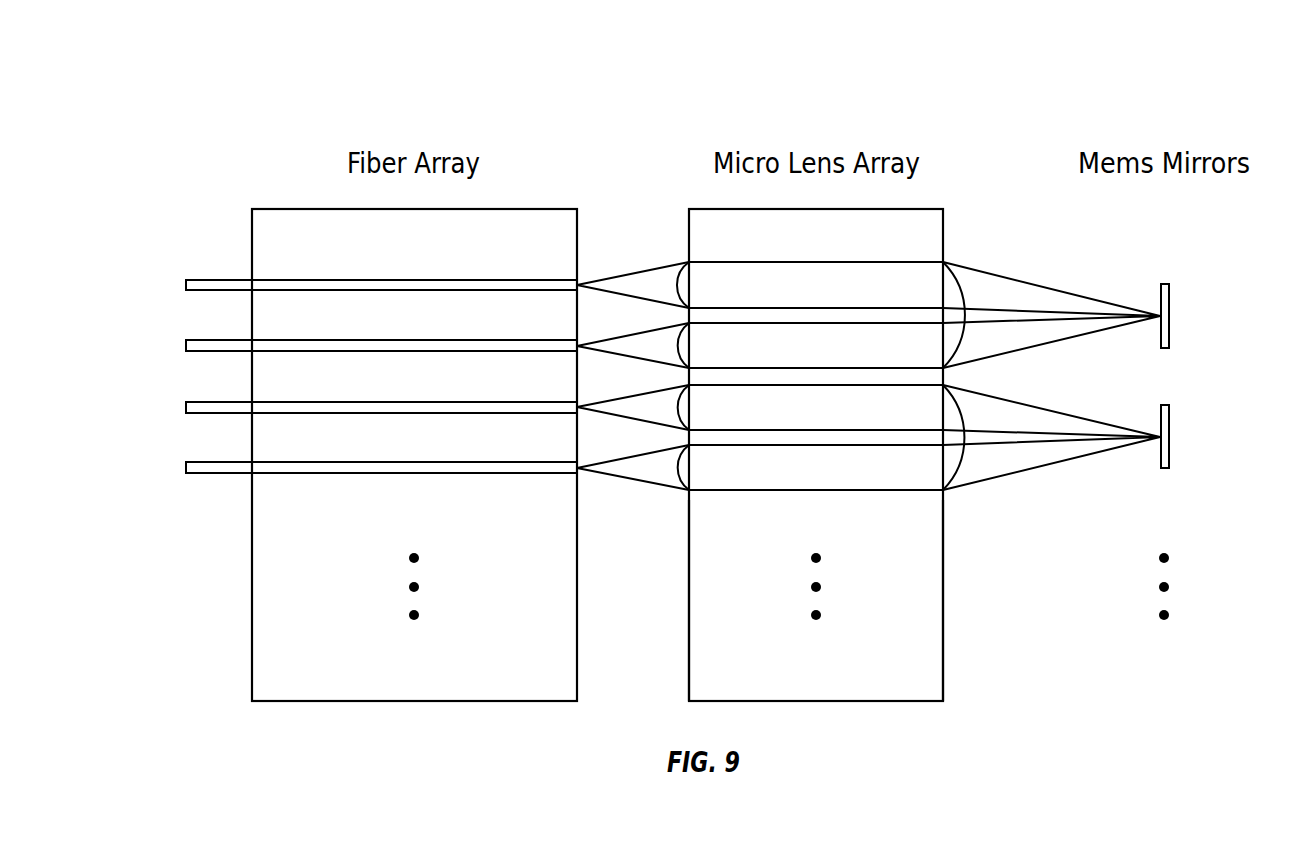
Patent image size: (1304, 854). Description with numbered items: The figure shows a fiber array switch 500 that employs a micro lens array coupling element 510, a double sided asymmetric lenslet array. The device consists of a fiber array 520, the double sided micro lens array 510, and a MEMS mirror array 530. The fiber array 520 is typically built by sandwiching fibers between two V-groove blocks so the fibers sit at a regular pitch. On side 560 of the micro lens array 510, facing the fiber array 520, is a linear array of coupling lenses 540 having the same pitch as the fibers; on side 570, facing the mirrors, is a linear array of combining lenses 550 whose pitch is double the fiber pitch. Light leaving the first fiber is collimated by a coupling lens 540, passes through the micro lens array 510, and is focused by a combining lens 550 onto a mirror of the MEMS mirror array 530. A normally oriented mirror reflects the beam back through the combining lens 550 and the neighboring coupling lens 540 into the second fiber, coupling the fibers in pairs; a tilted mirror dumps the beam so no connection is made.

The fiber array switch 500 is at (162, 80).
The micro lens array coupling element 510 is at (935, 241).
The fiber array 520 is at (270, 250).
The MEMS mirror array 530 is at (1172, 315).
The coupling lenses 540 is at (685, 285).
The combining lenses 550 is at (950, 292).
The side of the micro lens array 560 is at (689, 597).
The side of the micro lens array 570 is at (943, 597).